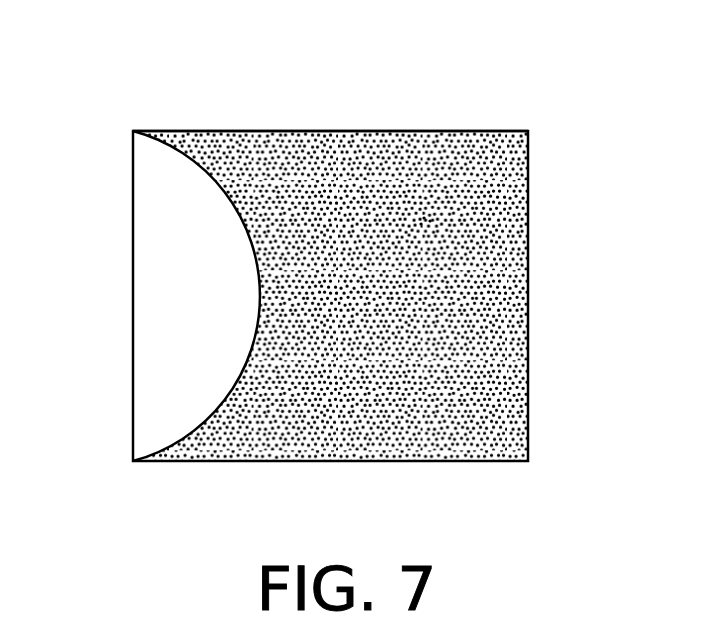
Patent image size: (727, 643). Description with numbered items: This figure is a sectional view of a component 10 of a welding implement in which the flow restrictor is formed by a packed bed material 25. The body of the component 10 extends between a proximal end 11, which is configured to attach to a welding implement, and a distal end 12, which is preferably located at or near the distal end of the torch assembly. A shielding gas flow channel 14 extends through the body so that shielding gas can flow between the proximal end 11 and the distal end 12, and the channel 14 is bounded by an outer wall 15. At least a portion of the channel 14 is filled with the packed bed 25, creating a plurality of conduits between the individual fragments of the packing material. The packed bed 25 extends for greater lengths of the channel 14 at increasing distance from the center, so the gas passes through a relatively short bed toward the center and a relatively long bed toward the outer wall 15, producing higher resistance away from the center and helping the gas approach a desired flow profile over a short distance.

The component 10 is at (128, 64).
The proximal end 11 is at (530, 382).
The distal end 12 is at (136, 202).
The shielding gas flow channel 14 is at (512, 252).
The outer wall 15 is at (232, 131).
The packed bed material 25 is at (422, 217).